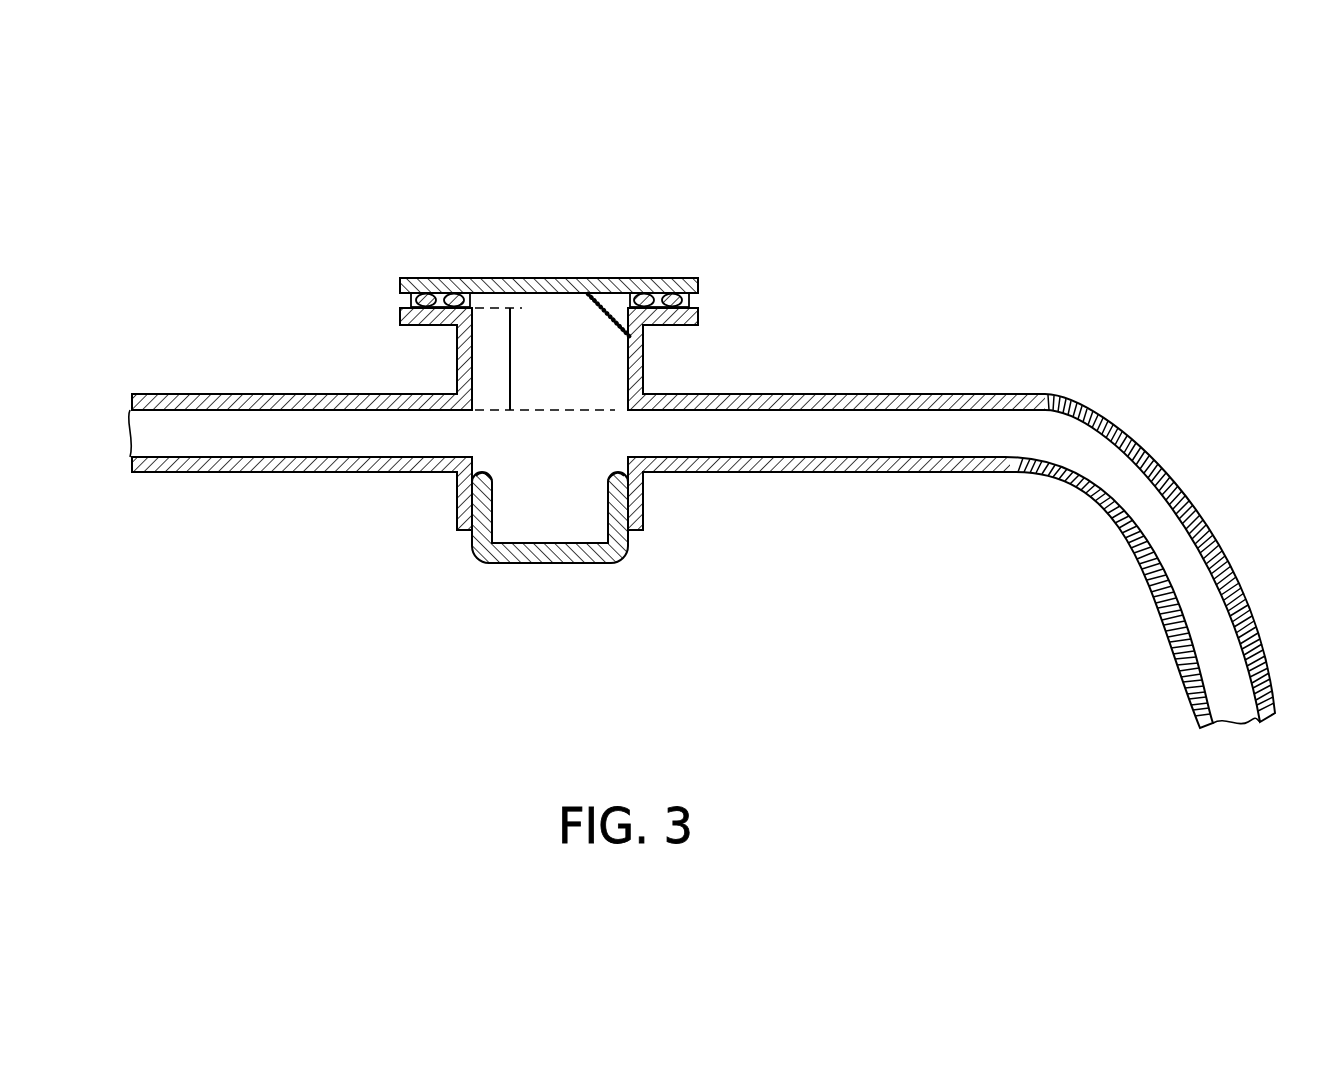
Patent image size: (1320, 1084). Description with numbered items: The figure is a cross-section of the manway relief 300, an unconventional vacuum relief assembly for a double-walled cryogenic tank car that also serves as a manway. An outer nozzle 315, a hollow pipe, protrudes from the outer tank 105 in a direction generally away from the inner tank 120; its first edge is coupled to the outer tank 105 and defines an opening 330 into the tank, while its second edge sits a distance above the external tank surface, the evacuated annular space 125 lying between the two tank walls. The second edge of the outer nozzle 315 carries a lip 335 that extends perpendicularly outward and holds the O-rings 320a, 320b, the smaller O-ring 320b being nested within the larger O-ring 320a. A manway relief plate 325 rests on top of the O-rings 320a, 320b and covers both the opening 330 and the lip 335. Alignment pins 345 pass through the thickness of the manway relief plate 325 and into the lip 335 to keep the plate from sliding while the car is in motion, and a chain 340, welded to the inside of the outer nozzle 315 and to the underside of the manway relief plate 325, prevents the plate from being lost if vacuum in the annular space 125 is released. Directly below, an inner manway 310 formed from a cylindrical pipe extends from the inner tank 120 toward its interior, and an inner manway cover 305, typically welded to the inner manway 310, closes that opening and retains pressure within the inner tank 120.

The outer tank 105 is at (885, 394).
The inner tank 120 is at (950, 472).
The annular space 125 is at (965, 428).
The manway relief 300 is at (290, 186).
The inner manway cover 305 is at (546, 565).
The inner manway 310 is at (587, 495).
The outer nozzle 315 is at (643, 366).
The O-ring 320a is at (426, 296).
The O-ring 320b is at (460, 297).
The manway relief plate 325 is at (550, 278).
The opening 330 is at (548, 414).
The lip 335 is at (425, 325).
The chain 340 is at (602, 307).
The alignment pins 345 is at (412, 300).